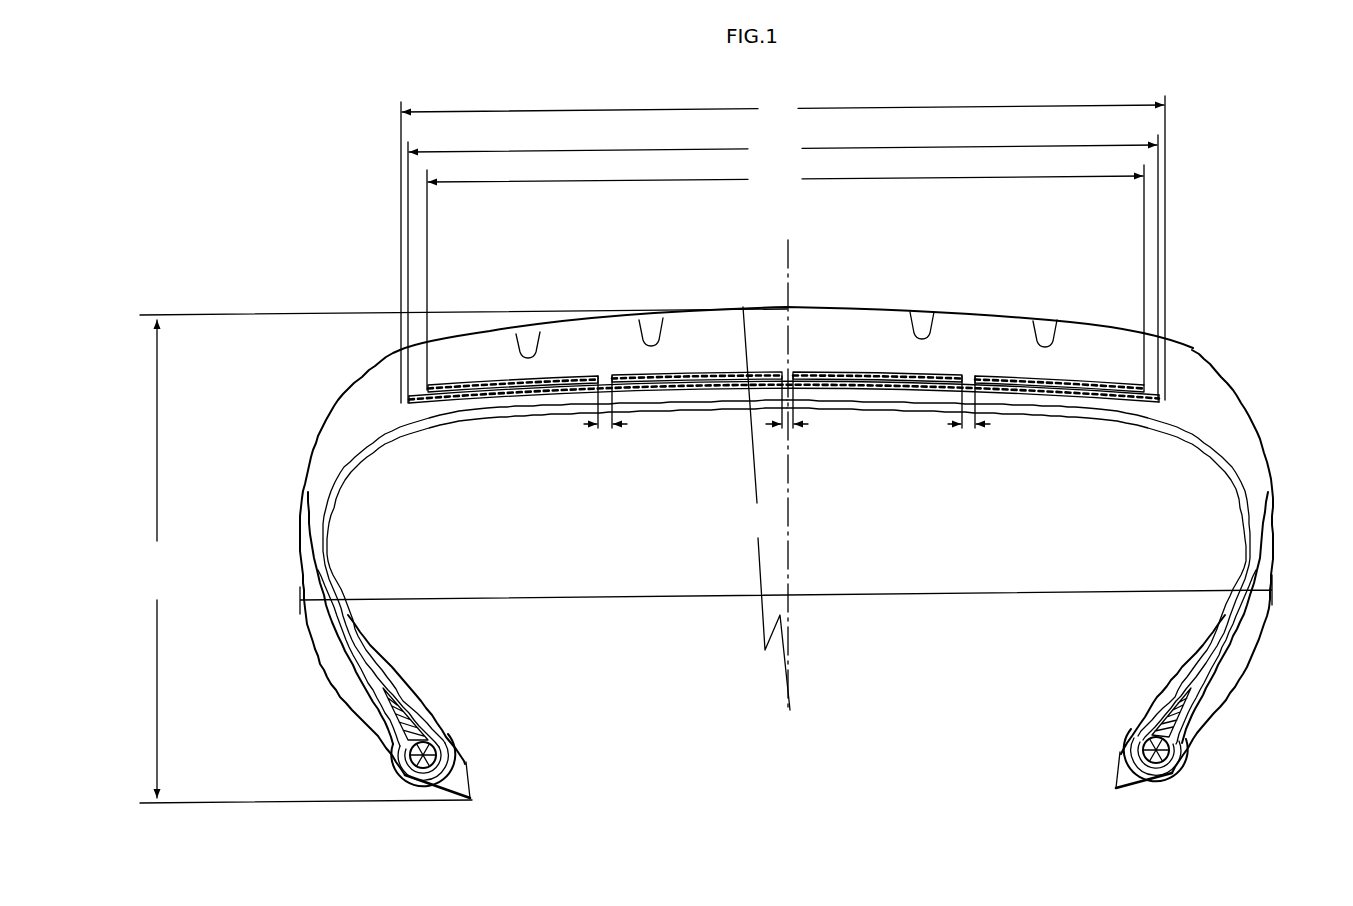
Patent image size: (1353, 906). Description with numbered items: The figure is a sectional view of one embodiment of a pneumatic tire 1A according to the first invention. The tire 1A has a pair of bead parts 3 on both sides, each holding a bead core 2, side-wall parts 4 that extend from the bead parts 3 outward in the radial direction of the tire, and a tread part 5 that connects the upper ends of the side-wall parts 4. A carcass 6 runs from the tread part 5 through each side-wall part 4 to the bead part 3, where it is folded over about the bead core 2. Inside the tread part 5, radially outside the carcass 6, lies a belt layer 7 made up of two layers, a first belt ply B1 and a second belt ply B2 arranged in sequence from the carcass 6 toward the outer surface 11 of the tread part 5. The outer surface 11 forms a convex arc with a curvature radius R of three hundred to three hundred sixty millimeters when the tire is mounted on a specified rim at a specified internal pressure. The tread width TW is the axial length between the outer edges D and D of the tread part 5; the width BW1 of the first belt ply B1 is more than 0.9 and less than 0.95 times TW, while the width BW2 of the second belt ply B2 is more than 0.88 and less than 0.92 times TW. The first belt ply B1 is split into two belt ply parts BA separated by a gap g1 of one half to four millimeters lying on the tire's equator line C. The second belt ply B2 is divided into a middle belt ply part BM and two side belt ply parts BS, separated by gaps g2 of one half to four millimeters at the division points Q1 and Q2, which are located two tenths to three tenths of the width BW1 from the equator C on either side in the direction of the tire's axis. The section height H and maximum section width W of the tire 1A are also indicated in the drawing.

The tire 1A is at (255, 207).
The bead core 2 is at (412, 776).
The bead part 3 is at (320, 688).
The side-wall part 4 is at (270, 487).
The tread part 5 is at (825, 296).
The carcass 6 is at (367, 442).
The belt layer 7 is at (710, 528).
The outer surface of the tread part 11 is at (711, 306).
The first belt ply B1 is at (670, 389).
The second belt ply B2 is at (727, 381).
The side belt ply part BS is at (492, 378).
The middle belt ply part BM is at (858, 372).
The belt ply part BA is at (482, 404).
The division point Q1 is at (975, 372).
The division point Q2 is at (607, 373).
The gap g1 is at (800, 424).
The gap g2 is at (801, 424).
The tread width TW is at (783, 247).
The width of the first belt ply BW1 is at (783, 266).
The width of the second belt ply BW2 is at (785, 276).
The outer edge of the tread part D is at (400, 348).
The tire section height H is at (161, 559).
The tire maximum section width W is at (786, 591).
The tire's equator line C is at (788, 563).
The curvature radius R is at (766, 508).